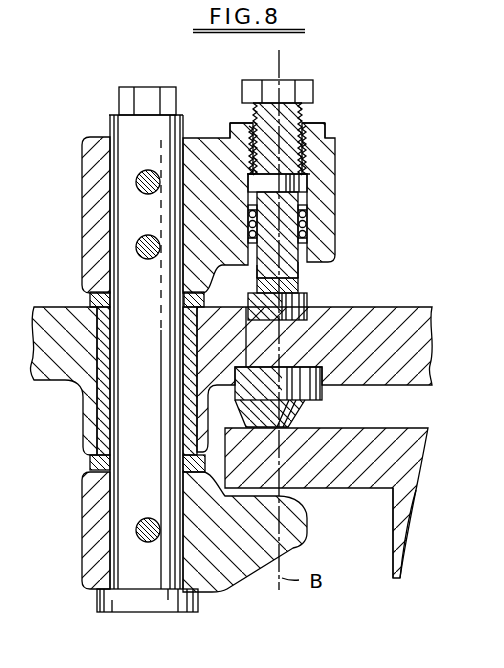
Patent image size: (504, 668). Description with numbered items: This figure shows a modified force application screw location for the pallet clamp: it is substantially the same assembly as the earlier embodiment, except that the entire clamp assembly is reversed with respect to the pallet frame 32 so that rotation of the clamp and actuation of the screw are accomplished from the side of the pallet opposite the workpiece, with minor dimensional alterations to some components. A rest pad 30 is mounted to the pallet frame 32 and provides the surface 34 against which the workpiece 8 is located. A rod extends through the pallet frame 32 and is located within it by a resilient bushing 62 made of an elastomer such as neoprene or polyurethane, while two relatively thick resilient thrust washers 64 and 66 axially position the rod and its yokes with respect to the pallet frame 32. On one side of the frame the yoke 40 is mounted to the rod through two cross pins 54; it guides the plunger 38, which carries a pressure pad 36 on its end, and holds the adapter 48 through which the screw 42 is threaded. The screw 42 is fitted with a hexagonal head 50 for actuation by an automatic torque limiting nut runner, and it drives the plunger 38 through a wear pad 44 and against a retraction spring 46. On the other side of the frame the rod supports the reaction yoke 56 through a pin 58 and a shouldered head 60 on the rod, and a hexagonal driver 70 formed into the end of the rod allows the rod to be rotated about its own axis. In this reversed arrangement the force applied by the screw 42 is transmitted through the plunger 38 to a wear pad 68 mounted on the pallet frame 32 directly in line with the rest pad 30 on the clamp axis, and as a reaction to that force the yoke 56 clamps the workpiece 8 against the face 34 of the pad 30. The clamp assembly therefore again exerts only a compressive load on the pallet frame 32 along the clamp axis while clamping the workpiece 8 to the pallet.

The workpiece 8 is at (405, 500).
The rest pad 30 is at (322, 397).
The pallet frame 32 is at (420, 338).
The surface 34 is at (323, 422).
The pressure pad 36 is at (300, 287).
The plunger 38 is at (300, 270).
The yoke 40 is at (336, 187).
The screw 42 is at (303, 114).
The wear pad 44 is at (282, 191).
The retraction spring 46 is at (308, 232).
The adapter 48 is at (318, 133).
The hexagonal head 50 is at (305, 91).
The cross pins 54 is at (136, 182).
The reaction yoke 56 is at (308, 517).
The pin 58 is at (137, 535).
The shouldered head 60 is at (97, 593).
The resilient bushing 62 is at (100, 415).
The resilient thrust washer 64 is at (90, 463).
The resilient thrust washer 66 is at (90, 298).
The wear pad 68 is at (313, 304).
The hexagonal driver 70 is at (141, 90).